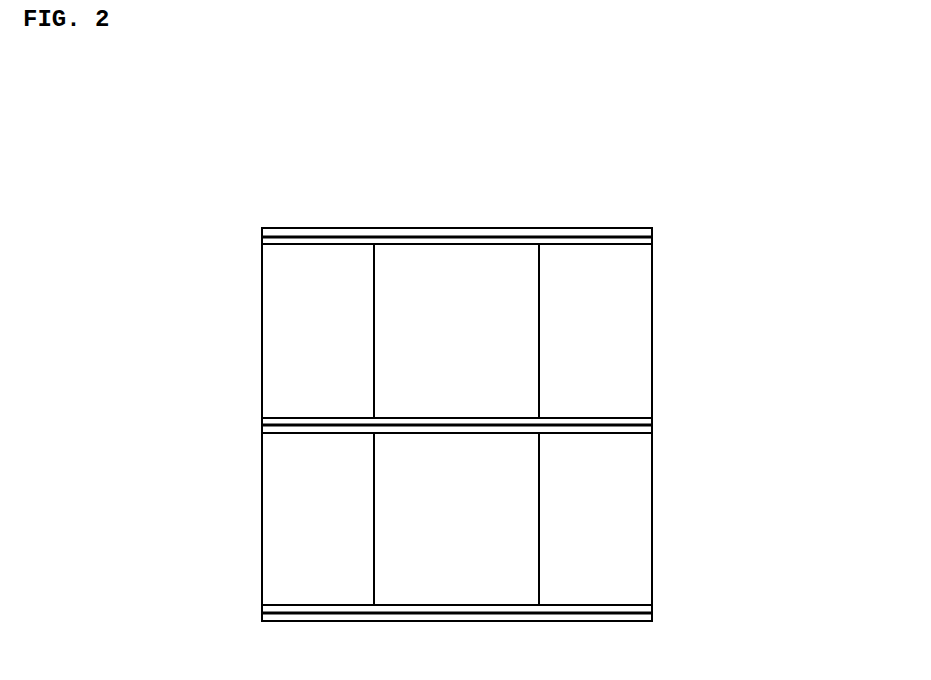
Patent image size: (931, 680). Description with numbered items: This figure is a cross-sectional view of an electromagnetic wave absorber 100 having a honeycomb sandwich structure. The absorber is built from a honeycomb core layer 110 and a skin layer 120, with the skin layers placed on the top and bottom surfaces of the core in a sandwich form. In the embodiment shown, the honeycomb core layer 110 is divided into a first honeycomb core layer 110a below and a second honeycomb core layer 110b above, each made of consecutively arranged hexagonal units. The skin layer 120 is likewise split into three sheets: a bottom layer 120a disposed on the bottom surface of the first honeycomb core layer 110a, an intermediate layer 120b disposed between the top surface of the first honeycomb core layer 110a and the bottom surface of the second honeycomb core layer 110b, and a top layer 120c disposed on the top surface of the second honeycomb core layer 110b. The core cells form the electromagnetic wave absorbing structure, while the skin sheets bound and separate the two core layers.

The electromagnetic wave absorber 100 is at (369, 155).
The honeycomb core layer 110 is at (117, 325).
The first honeycomb core layer 110a is at (262, 518).
The second honeycomb core layer 110b is at (262, 331).
The skin layer 120 is at (798, 240).
The bottom layer 120a is at (652, 613).
The intermediate layer 120b is at (652, 425).
The top layer 120c is at (652, 236).